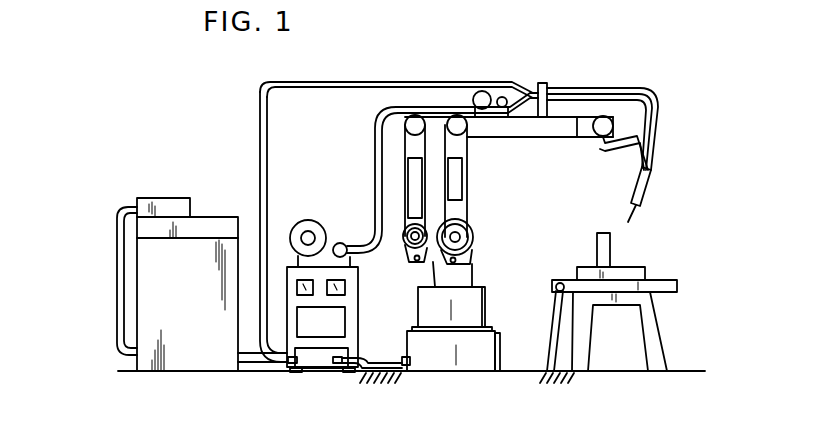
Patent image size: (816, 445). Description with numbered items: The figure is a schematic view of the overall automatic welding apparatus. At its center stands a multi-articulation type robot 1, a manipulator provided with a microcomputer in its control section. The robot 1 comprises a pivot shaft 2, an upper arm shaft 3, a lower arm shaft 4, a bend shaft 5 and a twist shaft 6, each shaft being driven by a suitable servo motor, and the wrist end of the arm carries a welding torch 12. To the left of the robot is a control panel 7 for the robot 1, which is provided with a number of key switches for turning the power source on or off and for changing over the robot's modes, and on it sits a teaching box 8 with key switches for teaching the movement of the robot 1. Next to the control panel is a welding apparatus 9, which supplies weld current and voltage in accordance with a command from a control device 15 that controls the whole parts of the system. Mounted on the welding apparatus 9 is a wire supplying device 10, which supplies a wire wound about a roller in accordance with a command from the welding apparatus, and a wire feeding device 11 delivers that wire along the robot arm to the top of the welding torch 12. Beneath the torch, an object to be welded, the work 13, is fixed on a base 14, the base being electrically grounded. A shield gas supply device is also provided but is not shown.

The robot 1 is at (525, 239).
The pivot shaft 2 is at (487, 308).
The upper arm shaft 3 is at (462, 234).
The lower arm shaft 4 is at (460, 130).
The bend shaft 5 is at (613, 125).
The twist shaft 6 is at (598, 141).
The control panel 7 is at (212, 227).
The teaching box 8 is at (172, 207).
The welding apparatus 9 is at (350, 313).
The wire supplying device 10 is at (312, 236).
The wire feeding device 11 is at (482, 95).
The welding torch 12 is at (648, 188).
The work 13 is at (633, 268).
The base 14 is at (653, 333).
The control device 15 is at (147, 297).